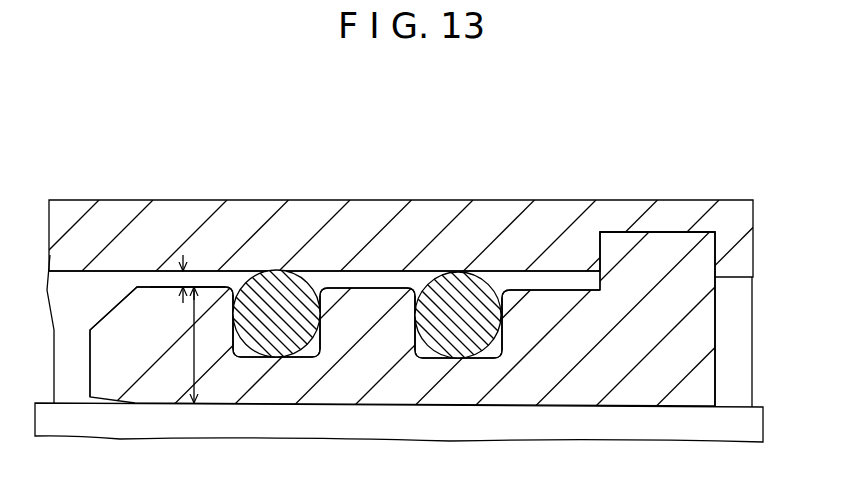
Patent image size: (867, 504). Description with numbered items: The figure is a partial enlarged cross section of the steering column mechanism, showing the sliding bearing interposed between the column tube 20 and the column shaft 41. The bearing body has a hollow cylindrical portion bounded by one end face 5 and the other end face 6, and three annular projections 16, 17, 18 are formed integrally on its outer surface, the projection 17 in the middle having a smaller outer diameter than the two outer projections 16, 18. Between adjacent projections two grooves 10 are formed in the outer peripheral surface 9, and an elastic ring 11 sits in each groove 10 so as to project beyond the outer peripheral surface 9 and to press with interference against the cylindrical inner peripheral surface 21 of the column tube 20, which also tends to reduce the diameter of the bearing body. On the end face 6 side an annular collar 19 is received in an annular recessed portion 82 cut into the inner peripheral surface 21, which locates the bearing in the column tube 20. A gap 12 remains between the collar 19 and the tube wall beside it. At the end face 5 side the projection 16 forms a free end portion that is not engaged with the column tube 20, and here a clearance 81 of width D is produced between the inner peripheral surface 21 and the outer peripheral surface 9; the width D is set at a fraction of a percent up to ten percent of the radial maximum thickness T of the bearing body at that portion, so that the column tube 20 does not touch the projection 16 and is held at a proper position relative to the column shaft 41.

The one end face 5 is at (66, 372).
The other end face 6 is at (713, 362).
The outer peripheral surface 9 is at (212, 287).
The groove 10 is at (308, 347).
The elastic ring 11 is at (275, 307).
The gap 12 is at (718, 320).
The annular projection 16 is at (183, 293).
The annular projection 17 is at (353, 300).
The annular projection 18 is at (552, 300).
The annular collar 19 is at (655, 250).
The column tube 20 is at (375, 222).
The inner peripheral surface 21 is at (88, 273).
The column shaft 41 is at (752, 425).
The clearance 81 is at (197, 277).
The annular recessed portion 82 is at (692, 243).
The width (thickness) of clearance D is at (180, 280).
The radial maximum thickness T is at (200, 366).